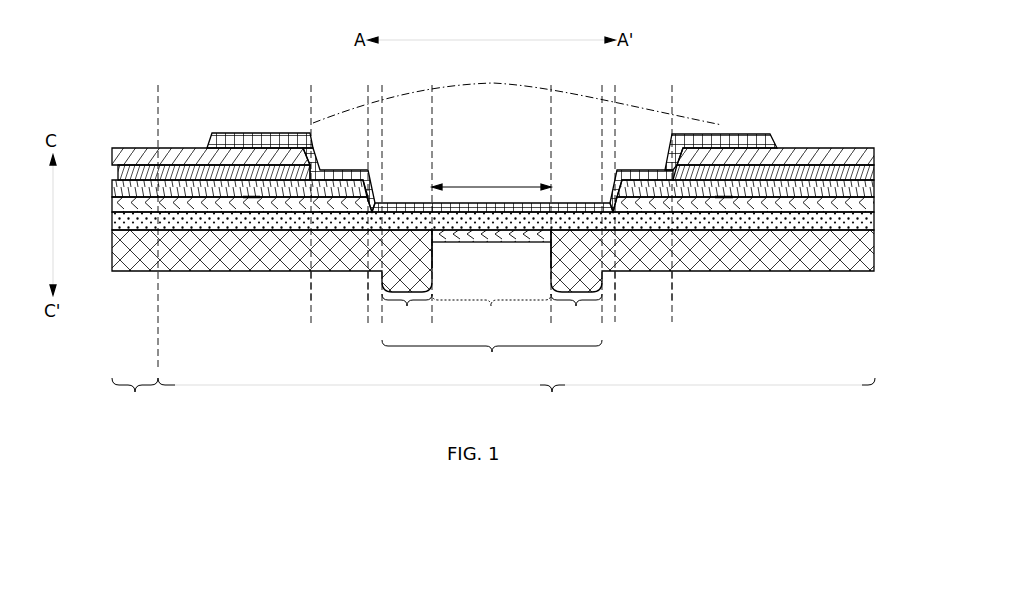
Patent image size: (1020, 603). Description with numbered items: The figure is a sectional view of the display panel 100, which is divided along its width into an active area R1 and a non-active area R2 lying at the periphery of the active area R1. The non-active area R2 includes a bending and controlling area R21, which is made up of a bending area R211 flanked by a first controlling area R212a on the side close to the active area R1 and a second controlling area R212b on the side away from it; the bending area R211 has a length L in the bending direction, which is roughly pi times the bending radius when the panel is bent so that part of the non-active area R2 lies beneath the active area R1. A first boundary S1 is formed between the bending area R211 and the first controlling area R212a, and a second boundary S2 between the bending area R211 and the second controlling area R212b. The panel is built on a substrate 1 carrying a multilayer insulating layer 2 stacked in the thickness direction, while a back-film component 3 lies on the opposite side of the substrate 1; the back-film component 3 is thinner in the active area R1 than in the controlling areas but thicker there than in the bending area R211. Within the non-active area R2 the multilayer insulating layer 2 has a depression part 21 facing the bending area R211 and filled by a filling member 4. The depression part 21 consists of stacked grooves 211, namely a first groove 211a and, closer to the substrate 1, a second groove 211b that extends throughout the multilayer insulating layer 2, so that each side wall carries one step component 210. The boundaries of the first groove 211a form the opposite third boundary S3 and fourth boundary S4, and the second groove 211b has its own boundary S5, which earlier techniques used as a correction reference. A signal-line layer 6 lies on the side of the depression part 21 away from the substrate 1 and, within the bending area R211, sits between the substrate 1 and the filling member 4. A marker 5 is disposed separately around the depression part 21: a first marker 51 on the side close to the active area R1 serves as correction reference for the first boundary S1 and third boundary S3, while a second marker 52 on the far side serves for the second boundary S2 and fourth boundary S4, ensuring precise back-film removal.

The display panel 100 is at (490, 214).
The substrate 1 is at (147, 225).
The multilayer insulating layer 2 is at (127, 154).
The back-film component 3 is at (157, 245).
The filling member 4 is at (483, 100).
The marker 5 is at (493, 253).
The first marker 51 is at (249, 200).
The second marker 52 is at (722, 200).
The signal-line layer 6 is at (220, 138).
The depression part 21 is at (489, 148).
The step component 210 is at (320, 170).
The groove 211 is at (690, 148).
The first groove 211a is at (645, 158).
The second groove 211b is at (572, 197).
The length of the bending area L is at (491, 179).
The first boundary S1 is at (434, 268).
The second boundary S2 is at (551, 268).
The third boundary S3 is at (311, 300).
The fourth boundary S4 is at (673, 300).
The boundary of the second groove S5 is at (368, 300).
The active area R1 is at (135, 396).
The non-active area R2 is at (516, 397).
The bending and controlling area R21 is at (492, 353).
The bending area R211 is at (491, 306).
The first controlling area R212a is at (407, 315).
The second controlling area R212b is at (576, 315).